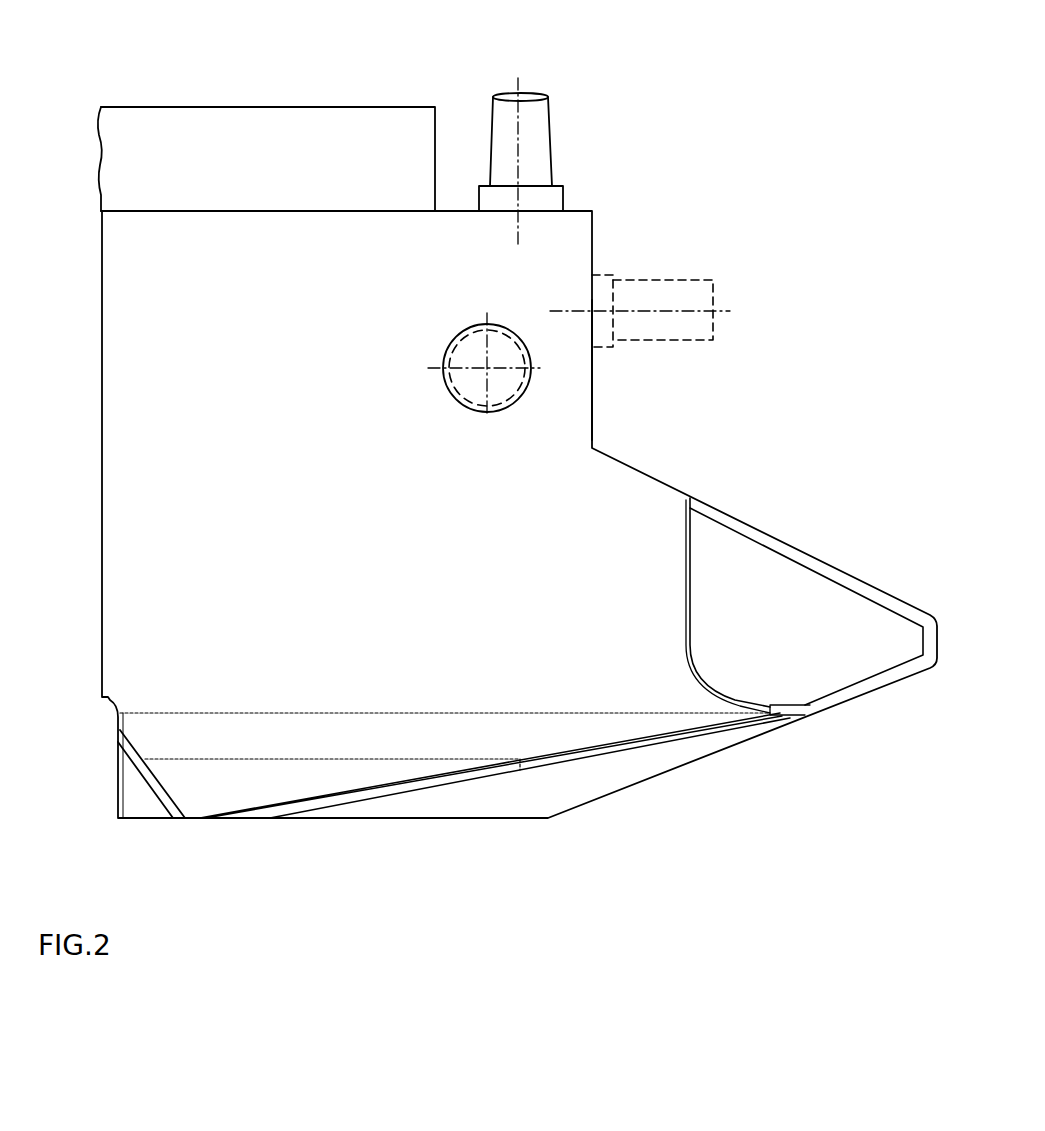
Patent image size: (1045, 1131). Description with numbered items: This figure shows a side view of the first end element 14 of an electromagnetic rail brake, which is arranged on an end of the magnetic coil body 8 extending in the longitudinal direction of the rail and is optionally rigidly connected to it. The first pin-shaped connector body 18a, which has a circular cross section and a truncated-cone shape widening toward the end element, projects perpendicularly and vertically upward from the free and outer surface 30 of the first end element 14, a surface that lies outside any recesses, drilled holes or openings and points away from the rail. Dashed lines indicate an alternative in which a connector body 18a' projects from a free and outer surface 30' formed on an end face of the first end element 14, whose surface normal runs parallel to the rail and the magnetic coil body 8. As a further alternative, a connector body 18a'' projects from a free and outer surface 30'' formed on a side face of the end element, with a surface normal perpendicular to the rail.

The magnetic coil body 8 is at (150, 128).
The free and outer surface 30 is at (519, 412).
The free and outer surface 30' is at (634, 370).
The free and outer surface 30'' is at (767, 579).
The first pin-shaped connector body 18a is at (559, 161).
The first pin-shaped electric connector body 18a' is at (666, 292).
The first pin-shaped electric connector body 18a'' is at (476, 394).
The first end element 14 is at (532, 675).